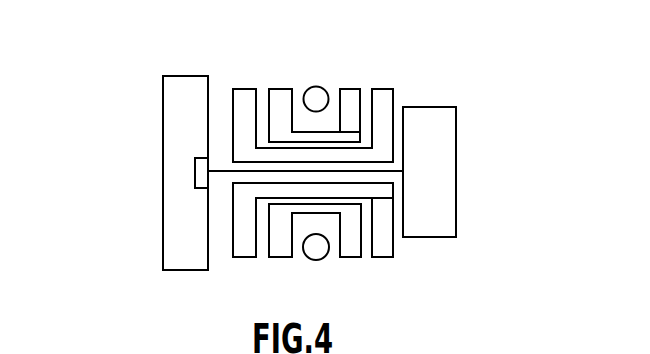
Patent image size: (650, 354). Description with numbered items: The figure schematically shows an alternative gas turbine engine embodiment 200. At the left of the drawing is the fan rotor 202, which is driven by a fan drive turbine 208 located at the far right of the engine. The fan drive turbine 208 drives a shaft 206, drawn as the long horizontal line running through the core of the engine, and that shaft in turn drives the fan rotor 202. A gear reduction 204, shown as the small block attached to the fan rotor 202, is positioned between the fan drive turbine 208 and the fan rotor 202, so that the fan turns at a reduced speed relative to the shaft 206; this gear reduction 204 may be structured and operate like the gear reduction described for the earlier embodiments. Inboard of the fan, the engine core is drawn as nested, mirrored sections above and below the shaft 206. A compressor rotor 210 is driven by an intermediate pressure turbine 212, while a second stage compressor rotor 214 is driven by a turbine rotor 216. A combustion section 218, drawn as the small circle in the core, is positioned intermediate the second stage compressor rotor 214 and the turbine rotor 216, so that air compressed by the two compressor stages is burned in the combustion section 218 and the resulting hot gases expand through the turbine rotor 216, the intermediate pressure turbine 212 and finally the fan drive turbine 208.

The embodiment 200 is at (133, 55).
The fan rotor 202 is at (174, 123).
The gear reduction 204 is at (196, 183).
The shaft 206 is at (382, 130).
The fan drive turbine 208 is at (443, 155).
The compressor rotor 210 is at (244, 233).
The intermediate pressure turbine 212 is at (378, 245).
The second stage compressor rotor 214 is at (278, 92).
The turbine rotor 216 is at (352, 92).
The combustion section 218 is at (317, 87).